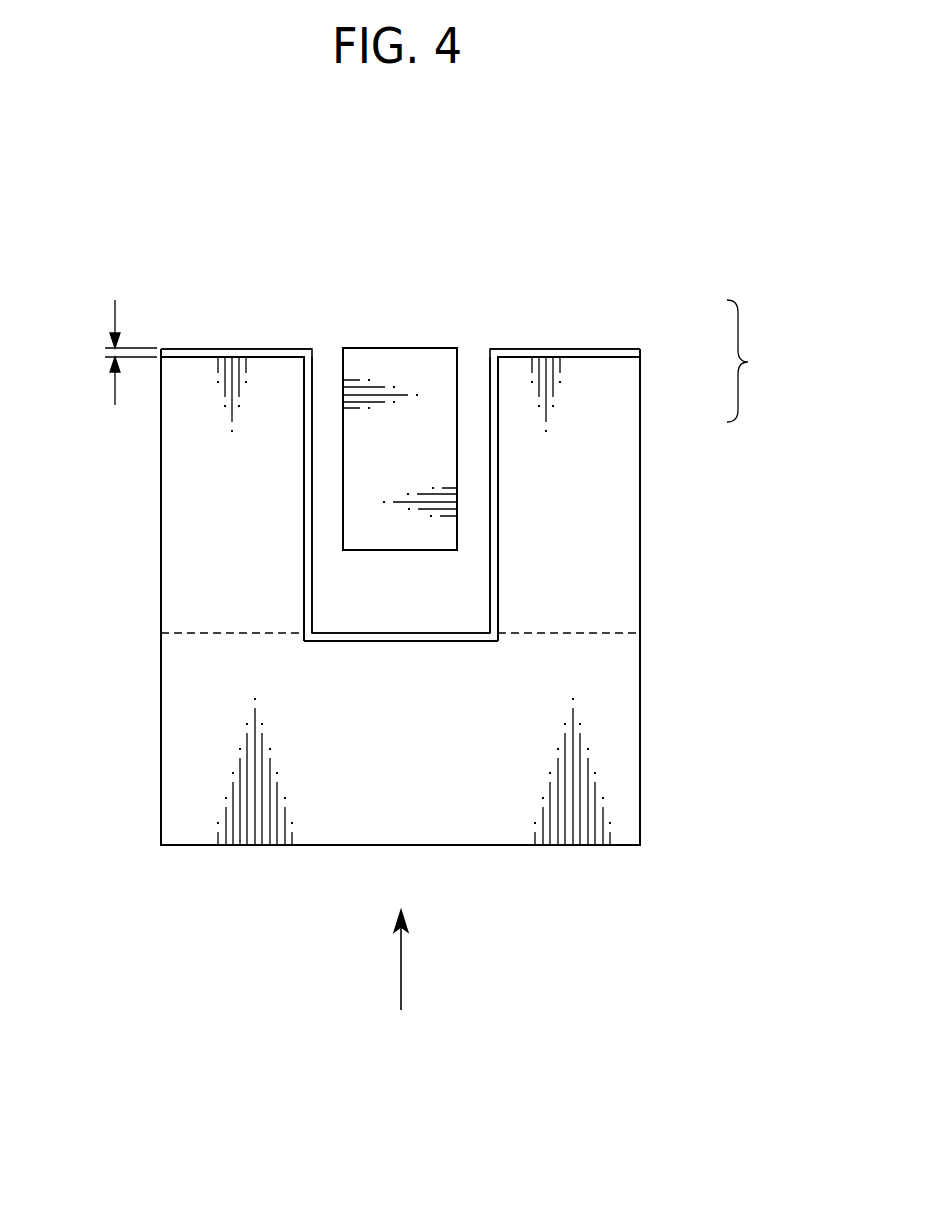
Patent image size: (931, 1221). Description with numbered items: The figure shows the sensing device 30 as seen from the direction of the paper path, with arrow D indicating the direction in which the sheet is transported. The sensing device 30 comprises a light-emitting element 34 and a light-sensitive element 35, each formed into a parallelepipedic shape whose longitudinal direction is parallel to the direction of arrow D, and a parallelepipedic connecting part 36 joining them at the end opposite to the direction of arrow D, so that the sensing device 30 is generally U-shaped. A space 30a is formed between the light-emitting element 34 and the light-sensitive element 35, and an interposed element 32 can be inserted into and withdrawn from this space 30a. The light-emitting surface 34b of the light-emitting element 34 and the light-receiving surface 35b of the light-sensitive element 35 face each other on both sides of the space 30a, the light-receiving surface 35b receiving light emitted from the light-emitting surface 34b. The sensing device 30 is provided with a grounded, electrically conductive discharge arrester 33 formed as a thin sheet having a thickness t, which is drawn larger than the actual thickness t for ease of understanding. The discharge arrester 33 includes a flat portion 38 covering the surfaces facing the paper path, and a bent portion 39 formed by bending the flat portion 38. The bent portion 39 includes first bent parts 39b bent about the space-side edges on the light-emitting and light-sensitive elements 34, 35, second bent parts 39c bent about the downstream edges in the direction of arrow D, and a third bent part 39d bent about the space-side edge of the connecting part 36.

The sensing device 30 is at (690, 733).
The space 30a is at (467, 578).
The interposed element 32 is at (402, 368).
The discharge arrester 33 is at (760, 361).
The light-emitting element 34 is at (161, 480).
The light-emitting surface 34b is at (311, 423).
The light-sensitive element 35 is at (641, 482).
The light-receiving surface 35b is at (492, 423).
The connecting part 36 is at (505, 853).
The flat portion 38 is at (607, 405).
The bent portion 39 is at (606, 353).
The first bent parts 39b is at (307, 518).
The second bent parts 39c is at (232, 348).
The third bent part 39d is at (395, 641).
The thickness t is at (131, 335).
The arrow D is at (400, 981).